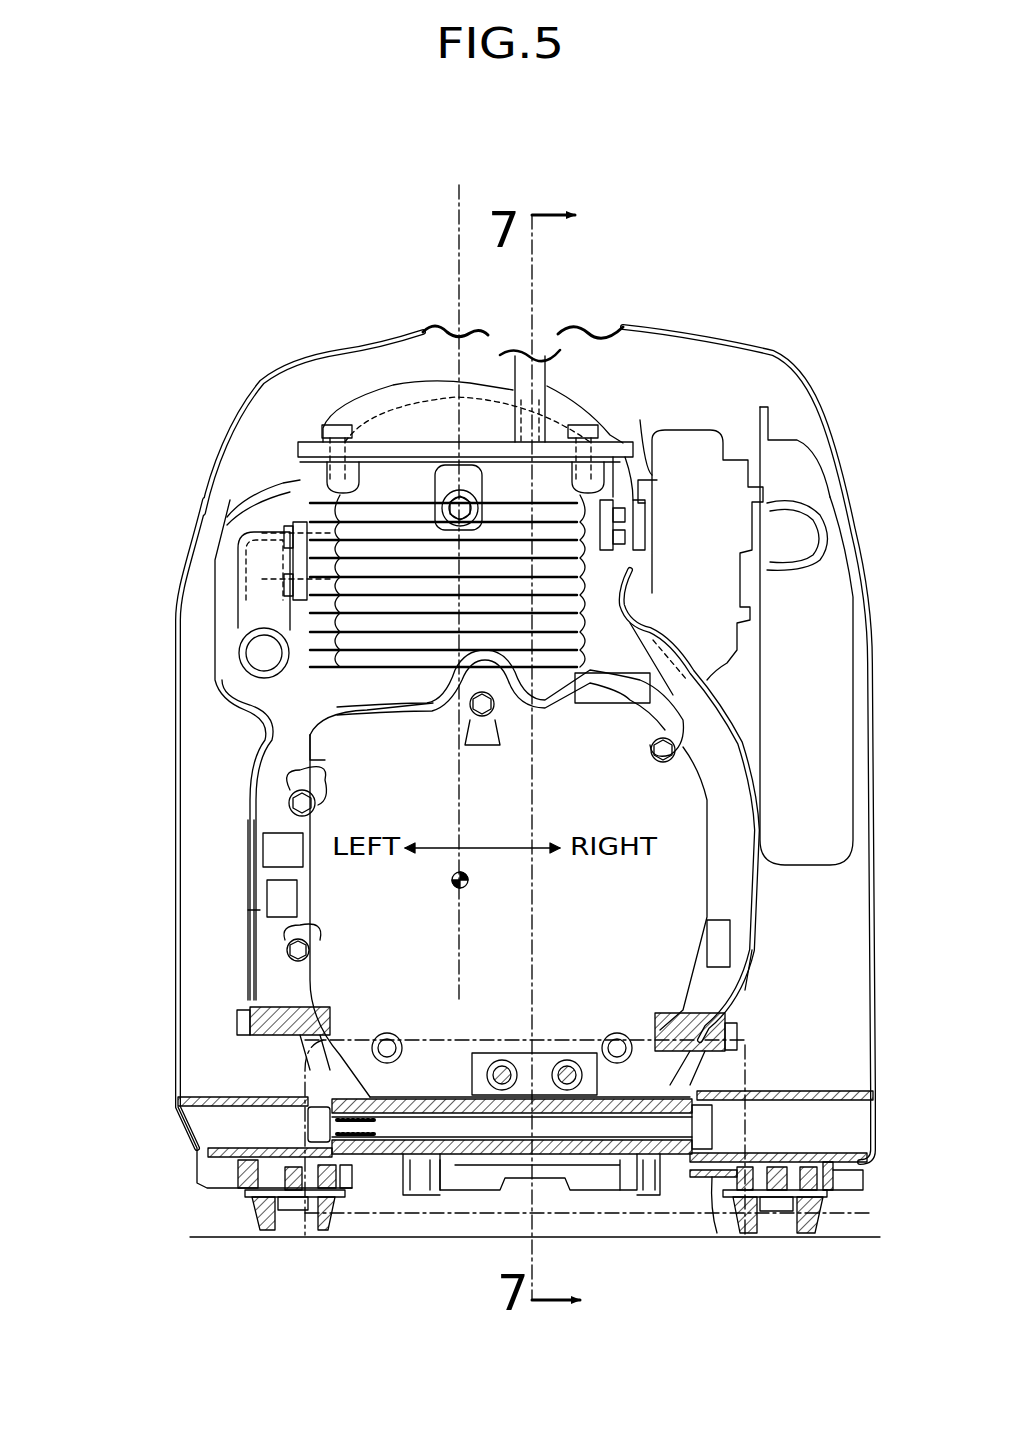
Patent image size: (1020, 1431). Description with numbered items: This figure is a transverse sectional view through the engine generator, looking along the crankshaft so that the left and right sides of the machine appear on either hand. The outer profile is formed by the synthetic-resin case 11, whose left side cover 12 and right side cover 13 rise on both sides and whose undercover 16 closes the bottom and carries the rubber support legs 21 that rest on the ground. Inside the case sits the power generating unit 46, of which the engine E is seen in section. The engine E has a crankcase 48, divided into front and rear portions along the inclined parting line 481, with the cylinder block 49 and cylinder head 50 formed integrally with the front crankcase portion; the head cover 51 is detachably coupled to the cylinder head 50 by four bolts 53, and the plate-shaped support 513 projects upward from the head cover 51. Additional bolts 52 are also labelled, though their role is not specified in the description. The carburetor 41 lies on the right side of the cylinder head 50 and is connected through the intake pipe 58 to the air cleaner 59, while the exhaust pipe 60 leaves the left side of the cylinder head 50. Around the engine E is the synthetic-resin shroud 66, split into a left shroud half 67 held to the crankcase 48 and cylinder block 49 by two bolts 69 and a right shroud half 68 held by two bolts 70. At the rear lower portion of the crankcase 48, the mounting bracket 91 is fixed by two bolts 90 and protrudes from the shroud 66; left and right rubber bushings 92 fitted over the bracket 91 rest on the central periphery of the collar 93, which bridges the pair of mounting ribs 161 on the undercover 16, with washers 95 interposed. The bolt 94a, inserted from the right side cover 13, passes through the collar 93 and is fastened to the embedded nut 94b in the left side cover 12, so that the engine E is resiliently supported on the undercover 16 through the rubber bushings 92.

The case 11 is at (190, 494).
The left side cover 12 is at (240, 407).
The right side cover 13 is at (780, 353).
The undercover 16 is at (440, 1207).
The mounting ribs 161 is at (647, 1150).
The support legs 21 is at (258, 1210).
The carburetor 41 is at (711, 570).
The power generating unit 46 is at (634, 412).
The crankcase 48 is at (714, 820).
The parting line 481 is at (592, 706).
The cylinder block 49 is at (567, 600).
The cylinder head 50 is at (377, 487).
The head cover 51 is at (355, 386).
The support 513 is at (540, 372).
The bolt 52 is at (312, 812).
The bolts 53 is at (332, 427).
The intake pipe 58 is at (780, 550).
The air cleaner 59 is at (828, 707).
The exhaust pipe 60 is at (235, 615).
The shroud 66 is at (250, 810).
The left shroud half 67 is at (245, 908).
The right shroud half 68 is at (753, 955).
The bolts 69 is at (240, 1023).
The bolts 70 is at (737, 1040).
The bolts 90 is at (565, 1060).
The mounting bracket 91 is at (470, 1037).
The rubber bushings 92 is at (455, 1095).
The collar 93 is at (683, 1152).
The bolt 94a is at (713, 1125).
The embedded nut 94b is at (308, 1137).
The washers 95 is at (457, 1193).
The engine E is at (717, 872).